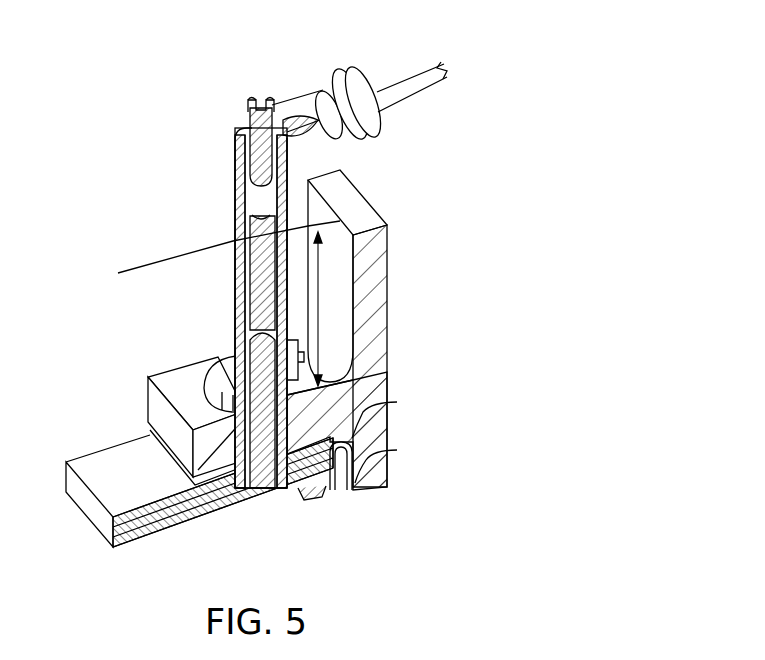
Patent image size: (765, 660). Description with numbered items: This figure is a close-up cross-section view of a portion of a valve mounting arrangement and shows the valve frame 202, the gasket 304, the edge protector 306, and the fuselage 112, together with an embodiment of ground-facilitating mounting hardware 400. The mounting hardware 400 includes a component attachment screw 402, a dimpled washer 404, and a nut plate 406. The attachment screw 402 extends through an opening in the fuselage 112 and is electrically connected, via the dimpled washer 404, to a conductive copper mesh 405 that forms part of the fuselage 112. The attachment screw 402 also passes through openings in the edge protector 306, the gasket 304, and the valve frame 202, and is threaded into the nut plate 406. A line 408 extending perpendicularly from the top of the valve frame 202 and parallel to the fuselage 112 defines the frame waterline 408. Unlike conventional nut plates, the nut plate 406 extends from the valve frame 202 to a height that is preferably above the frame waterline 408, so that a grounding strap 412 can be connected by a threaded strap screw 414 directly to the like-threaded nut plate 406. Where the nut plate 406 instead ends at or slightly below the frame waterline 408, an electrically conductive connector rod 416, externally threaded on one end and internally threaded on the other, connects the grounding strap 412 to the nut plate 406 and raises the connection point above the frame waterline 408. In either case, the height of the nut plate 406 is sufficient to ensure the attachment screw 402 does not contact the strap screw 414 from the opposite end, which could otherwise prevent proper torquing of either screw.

The fuselage 112 is at (78, 496).
The valve frame 202 is at (387, 276).
The gasket 304 is at (374, 412).
The edge protector 306 is at (374, 457).
The ground-facilitating mounting hardware 400 is at (128, 197).
The component attachment screw 402 is at (314, 492).
The dimpled washer 404 is at (250, 506).
The conductive copper mesh 405 is at (172, 522).
The nut plate 406 is at (233, 298).
The frame waterline 408 is at (205, 251).
The grounding strap 412 is at (434, 66).
The threaded strap screw 414 is at (264, 104).
The electrically conductive connector rod 416 is at (240, 178).